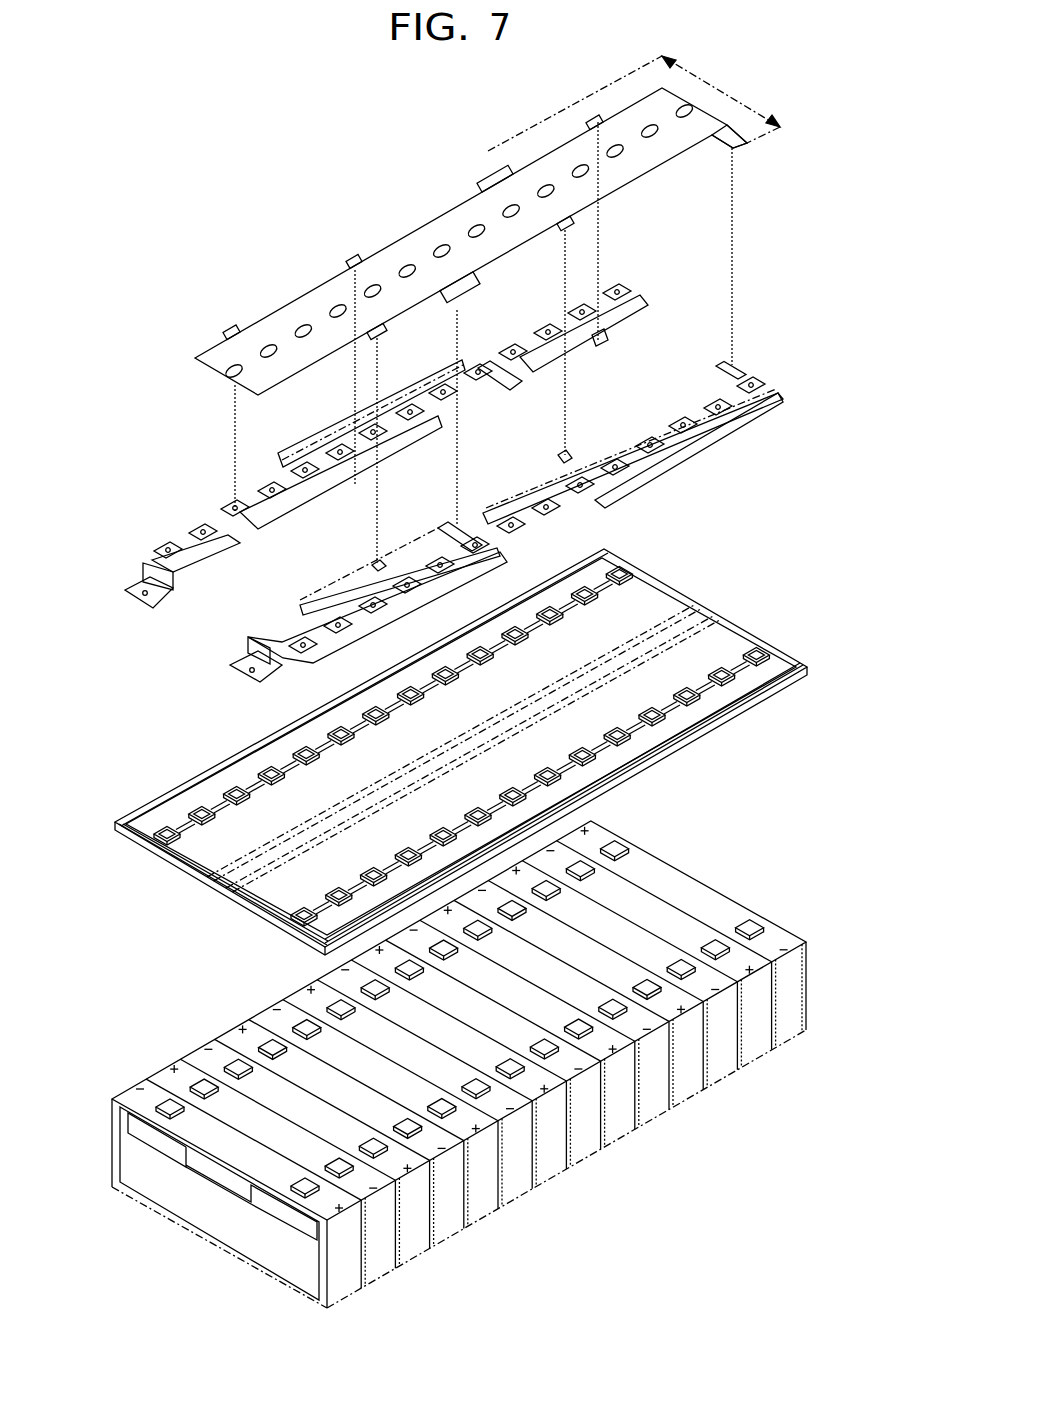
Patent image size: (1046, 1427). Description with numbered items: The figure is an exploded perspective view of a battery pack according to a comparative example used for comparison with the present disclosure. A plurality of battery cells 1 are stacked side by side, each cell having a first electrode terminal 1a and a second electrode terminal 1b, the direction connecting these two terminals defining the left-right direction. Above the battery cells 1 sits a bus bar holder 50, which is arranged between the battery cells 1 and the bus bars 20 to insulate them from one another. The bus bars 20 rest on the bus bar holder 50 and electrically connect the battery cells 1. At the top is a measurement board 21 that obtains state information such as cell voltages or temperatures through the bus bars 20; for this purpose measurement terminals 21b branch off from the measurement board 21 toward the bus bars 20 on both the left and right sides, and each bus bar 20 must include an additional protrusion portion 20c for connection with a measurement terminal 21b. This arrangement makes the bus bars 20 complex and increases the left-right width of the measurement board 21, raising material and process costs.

The battery cell 1 is at (130, 1092).
The first electrode terminal 1a is at (298, 1190).
The second electrode terminal 1b is at (162, 1112).
The bus bar 20 is at (648, 298).
The protrusion portion 20c is at (720, 366).
The measurement board 21 is at (204, 389).
The measurement terminal 21b is at (492, 166).
The bus bar holder 50 is at (665, 598).